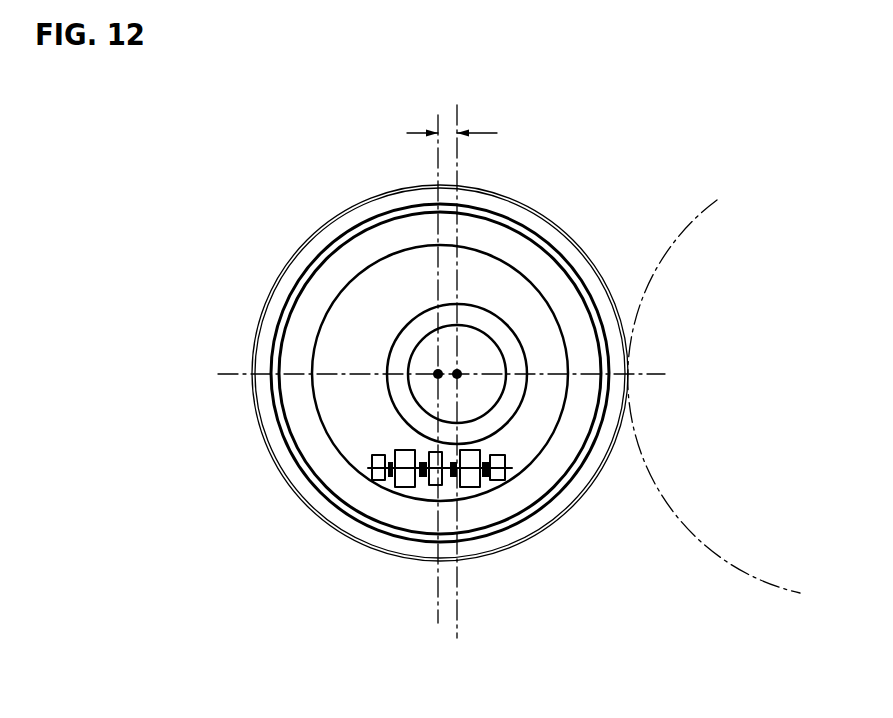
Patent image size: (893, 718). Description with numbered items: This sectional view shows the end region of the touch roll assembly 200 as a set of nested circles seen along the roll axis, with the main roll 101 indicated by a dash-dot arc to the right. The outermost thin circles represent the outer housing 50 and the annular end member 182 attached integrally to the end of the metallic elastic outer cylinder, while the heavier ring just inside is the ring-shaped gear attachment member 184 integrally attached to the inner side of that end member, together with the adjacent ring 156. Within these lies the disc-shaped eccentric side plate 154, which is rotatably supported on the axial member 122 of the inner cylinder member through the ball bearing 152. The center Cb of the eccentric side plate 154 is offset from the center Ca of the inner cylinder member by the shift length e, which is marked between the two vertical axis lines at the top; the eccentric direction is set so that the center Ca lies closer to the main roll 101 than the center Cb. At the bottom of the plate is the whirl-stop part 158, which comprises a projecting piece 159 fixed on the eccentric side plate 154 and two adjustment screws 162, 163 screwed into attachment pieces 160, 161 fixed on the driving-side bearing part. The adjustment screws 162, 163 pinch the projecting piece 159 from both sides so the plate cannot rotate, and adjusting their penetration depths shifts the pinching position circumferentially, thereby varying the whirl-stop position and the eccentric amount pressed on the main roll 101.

The rotation device 200 is at (451, 346).
The outer housing 50 is at (522, 205).
The annular end member 182 is at (262, 330).
The ring-shaped gear attachment member 184 is at (310, 452).
The ring (155) 156 is at (570, 443).
The eccentric side plate 154 is at (553, 398).
The ball bearing 152 is at (520, 365).
The axial member 122 is at (487, 353).
The whirl-stop part 158 is at (422, 488).
The projecting piece 159 is at (448, 483).
The attachment piece 160 is at (413, 477).
The attachment piece 161 is at (475, 483).
The adjustment screw 162 is at (368, 470).
The adjustment screw 163 is at (508, 468).
The main roll 101 is at (705, 545).
The center of the inner cylinder member Ca is at (457, 374).
The center of the eccentric side plate Cb is at (437, 376).
The shift length e is at (448, 133).